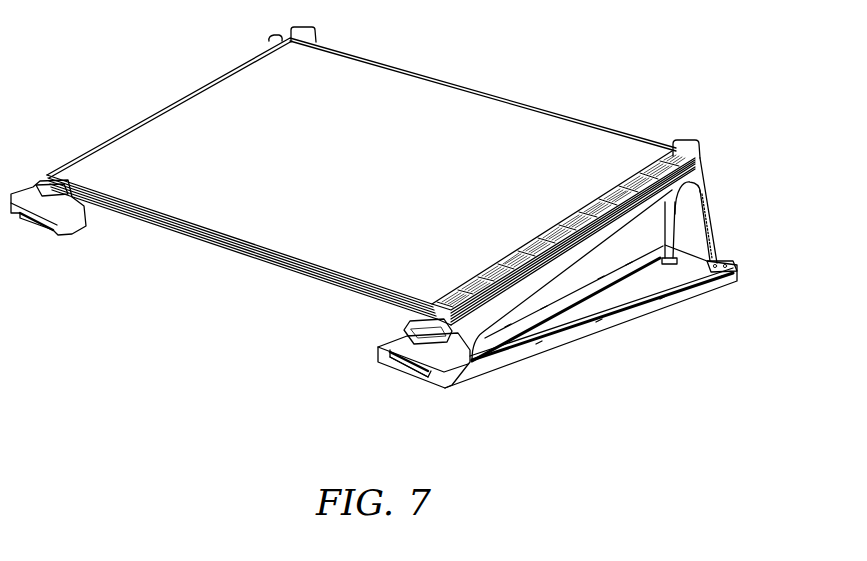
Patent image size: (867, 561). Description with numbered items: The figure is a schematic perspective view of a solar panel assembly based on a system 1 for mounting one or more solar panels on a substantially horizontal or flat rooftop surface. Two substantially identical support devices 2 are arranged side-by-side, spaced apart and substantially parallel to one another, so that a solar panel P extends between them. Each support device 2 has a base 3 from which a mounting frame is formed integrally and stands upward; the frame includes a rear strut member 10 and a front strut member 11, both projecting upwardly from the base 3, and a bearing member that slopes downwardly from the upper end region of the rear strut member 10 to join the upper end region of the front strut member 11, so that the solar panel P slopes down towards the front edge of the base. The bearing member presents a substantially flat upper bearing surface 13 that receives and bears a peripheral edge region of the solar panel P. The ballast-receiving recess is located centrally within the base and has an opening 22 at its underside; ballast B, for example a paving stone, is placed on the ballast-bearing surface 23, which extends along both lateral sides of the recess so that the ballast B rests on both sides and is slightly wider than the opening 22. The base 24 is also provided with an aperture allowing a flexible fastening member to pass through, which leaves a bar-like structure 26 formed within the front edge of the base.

The system 1 is at (125, 66).
The support device 2 is at (353, 180).
The solar panel P is at (492, 121).
The upper bearing surface 13 is at (672, 148).
The rear strut member 10 is at (707, 184).
The front strut member 11 is at (383, 371).
The base 24 is at (416, 372).
The bar-like structure 26 is at (397, 368).
The base 3 is at (591, 327).
The opening 22 is at (588, 308).
The ballast-bearing surface 23 is at (652, 275).
The ballast B is at (534, 322).